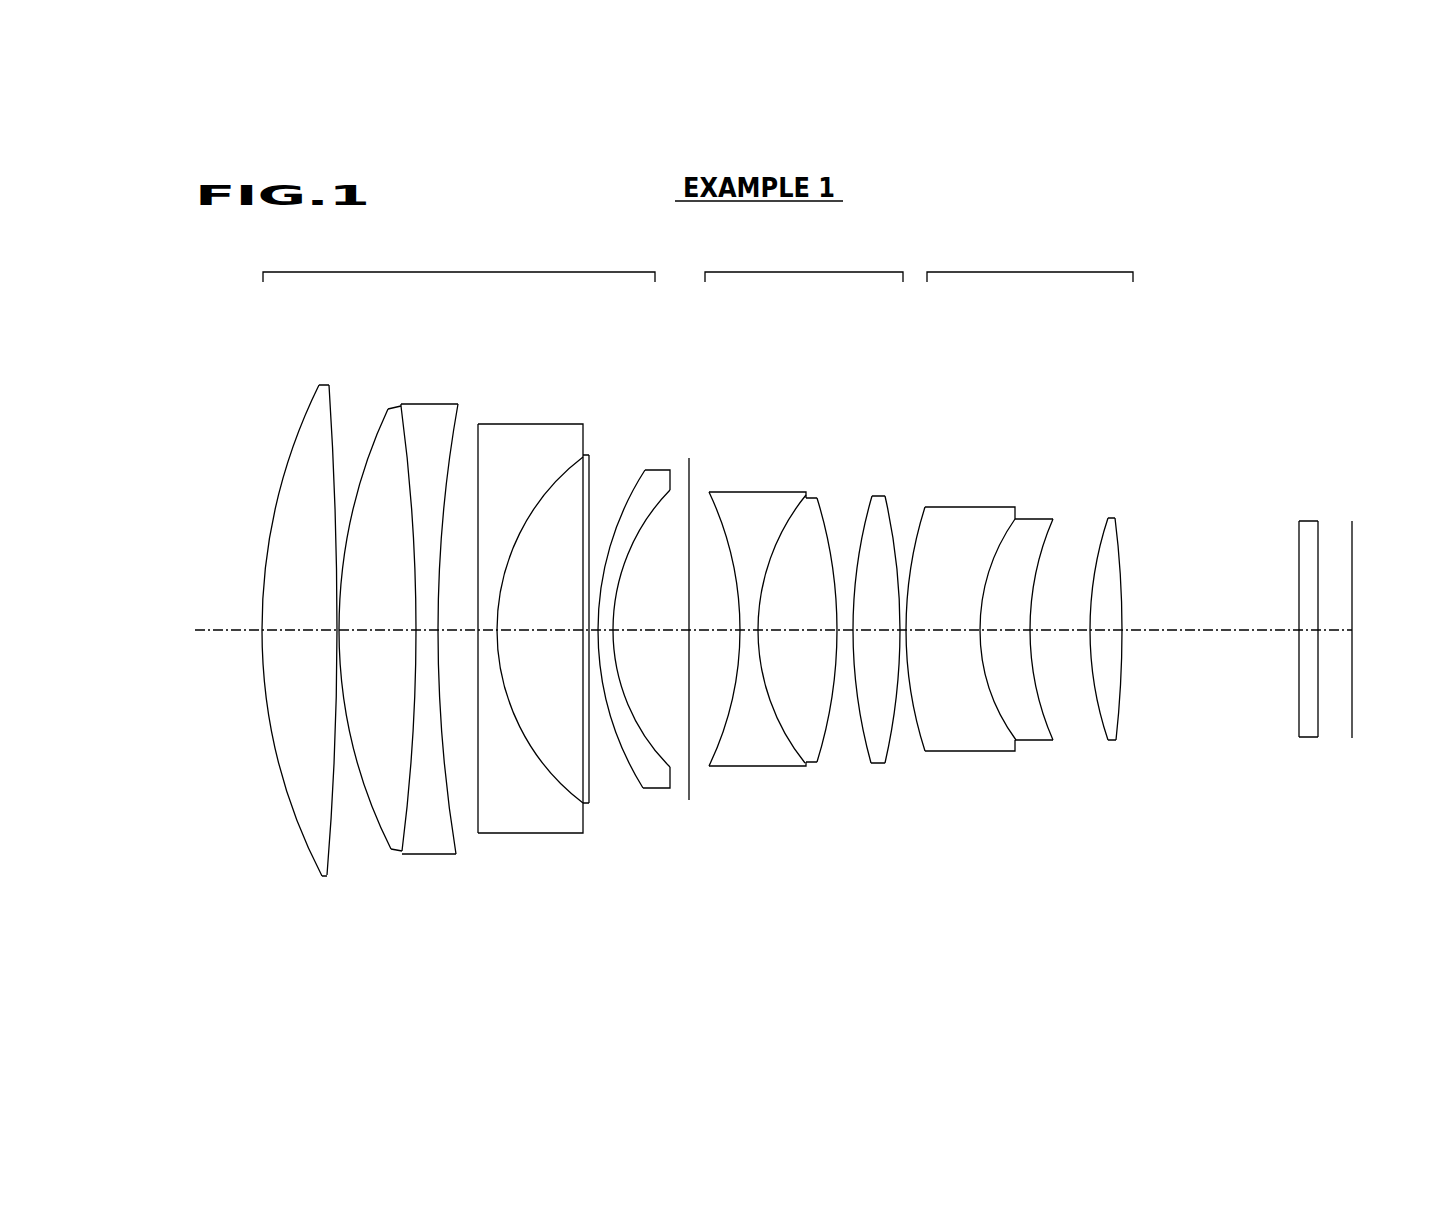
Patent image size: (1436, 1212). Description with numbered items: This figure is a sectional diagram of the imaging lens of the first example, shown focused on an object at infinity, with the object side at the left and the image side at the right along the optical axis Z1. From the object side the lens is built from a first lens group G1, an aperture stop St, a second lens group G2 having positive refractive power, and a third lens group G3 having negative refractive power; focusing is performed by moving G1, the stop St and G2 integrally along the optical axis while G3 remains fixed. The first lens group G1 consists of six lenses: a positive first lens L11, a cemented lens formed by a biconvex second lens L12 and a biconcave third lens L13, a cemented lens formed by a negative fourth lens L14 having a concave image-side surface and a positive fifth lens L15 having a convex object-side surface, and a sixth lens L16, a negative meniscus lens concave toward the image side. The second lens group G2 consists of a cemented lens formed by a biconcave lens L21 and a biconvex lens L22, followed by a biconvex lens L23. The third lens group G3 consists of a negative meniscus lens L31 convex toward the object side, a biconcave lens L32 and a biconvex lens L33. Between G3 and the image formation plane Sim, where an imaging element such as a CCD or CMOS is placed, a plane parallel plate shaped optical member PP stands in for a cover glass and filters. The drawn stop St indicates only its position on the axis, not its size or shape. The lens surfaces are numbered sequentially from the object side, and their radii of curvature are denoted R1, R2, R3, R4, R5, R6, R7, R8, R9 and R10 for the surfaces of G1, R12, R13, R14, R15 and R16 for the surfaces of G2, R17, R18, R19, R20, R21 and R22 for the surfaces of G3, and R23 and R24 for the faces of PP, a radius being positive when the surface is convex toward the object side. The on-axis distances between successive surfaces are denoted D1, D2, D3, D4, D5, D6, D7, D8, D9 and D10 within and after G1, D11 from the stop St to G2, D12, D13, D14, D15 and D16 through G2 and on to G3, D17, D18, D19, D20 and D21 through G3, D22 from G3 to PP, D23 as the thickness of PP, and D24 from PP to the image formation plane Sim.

The optical axis Z1 is at (220, 627).
The first lens group G1 is at (459, 262).
The second lens group G2 is at (804, 262).
The third lens group G3 is at (1030, 262).
The first group first lens L11 is at (291, 614).
The first group second lens L12 is at (375, 649).
The first group third lens L13 is at (425, 633).
The first group fourth lens L14 is at (531, 649).
The first group fifth lens L15 is at (598, 633).
The first group sixth lens L16 is at (636, 630).
The aperture stop St is at (689, 456).
The second group first lens L21 is at (748, 633).
The second group second lens L22 is at (799, 649).
The second group third lens L23 is at (856, 633).
The third group first lens L31 is at (953, 649).
The third group second lens L32 is at (1017, 614).
The third group third lens L33 is at (1070, 649).
The plane parallel plate shaped optical member PP is at (1200, 686).
The image formation plane Sim is at (1329, 686).
The radius of curvature of first surface R1 is at (297, 823).
The radius of curvature of second surface R2 is at (330, 862).
The radius of curvature of third surface R3 is at (388, 812).
The radius of curvature of fourth surface R4 is at (403, 845).
The radius of curvature of fifth surface R5 is at (463, 785).
The radius of curvature of sixth surface R6 is at (478, 745).
The radius of curvature of seventh surface R7 is at (532, 748).
The radius of curvature of eighth surface R8 is at (590, 790).
The radius of curvature of ninth surface R9 is at (643, 783).
The radius of curvature of tenth surface R10 is at (647, 720).
The radius of curvature of twelfth surface R12 is at (720, 745).
The radius of curvature of thirteenth surface R13 is at (780, 727).
The radius of curvature of fourteenth surface R14 is at (822, 740).
The radius of curvature of fifteenth surface R15 is at (868, 753).
The radius of curvature of sixteenth surface R16 is at (890, 740).
The radius of curvature of seventeenth surface R17 is at (923, 748).
The radius of curvature of eighteenth surface R18 is at (1003, 718).
The radius of curvature of nineteenth surface R19 is at (1023, 703).
The radius of curvature of twentieth surface R20 is at (1055, 712).
The radius of curvature of twenty-first surface R21 is at (1107, 737).
The radius of curvature of twenty-second surface R22 is at (1120, 707).
The radius of curvature of twenty-third surface R23 is at (1299, 718).
The radius of curvature of twenty-fourth surface R24 is at (1320, 718).
The surface distance D1 is at (298, 615).
The surface distance D2 is at (335, 608).
The surface distance D3 is at (376, 615).
The surface distance D4 is at (415, 612).
The surface distance D5 is at (454, 615).
The surface distance D6 is at (488, 628).
The surface distance D7 is at (541, 614).
The surface distance D8 is at (583, 625).
The surface distance D9 is at (607, 628).
The surface distance D10 is at (652, 614).
The surface distance D11 is at (715, 614).
The surface distance D12 is at (750, 628).
The surface distance D13 is at (795, 614).
The surface distance D14 is at (845, 628).
The surface distance D15 is at (873, 628).
The surface distance D16 is at (908, 597).
The surface distance D17 is at (942, 615).
The surface distance D18 is at (1007, 615).
The surface distance D19 is at (1036, 628).
The surface distance D20 is at (1064, 615).
The surface distance D21 is at (1103, 627).
The surface distance D22 is at (1198, 614).
The surface distance D23 is at (1307, 626).
The surface distance D24 is at (1335, 627).